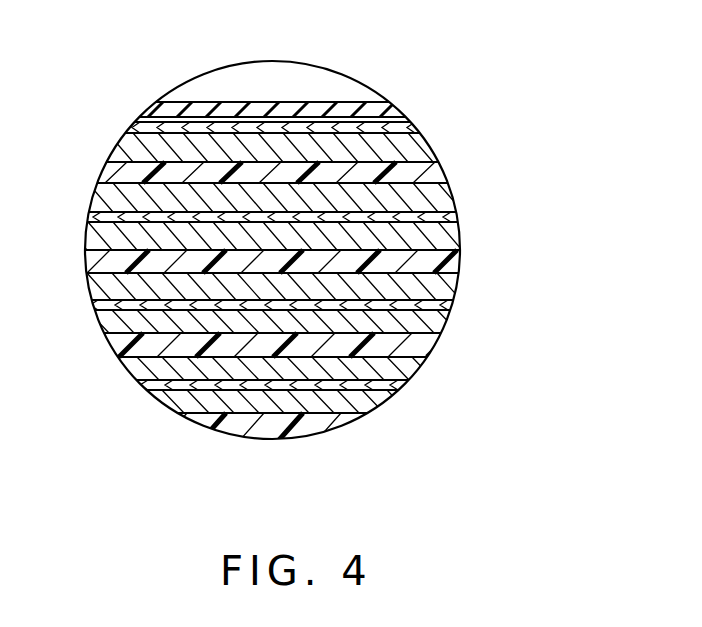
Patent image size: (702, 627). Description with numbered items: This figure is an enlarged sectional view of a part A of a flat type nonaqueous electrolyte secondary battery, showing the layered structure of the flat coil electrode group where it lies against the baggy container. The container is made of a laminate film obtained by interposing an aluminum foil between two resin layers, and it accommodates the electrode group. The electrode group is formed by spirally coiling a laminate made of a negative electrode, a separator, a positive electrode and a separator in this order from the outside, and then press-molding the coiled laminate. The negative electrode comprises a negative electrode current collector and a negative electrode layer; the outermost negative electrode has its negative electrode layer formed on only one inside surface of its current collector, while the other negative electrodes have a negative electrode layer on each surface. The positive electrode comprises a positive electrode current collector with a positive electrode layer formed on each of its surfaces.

The part A is at (186, 93).